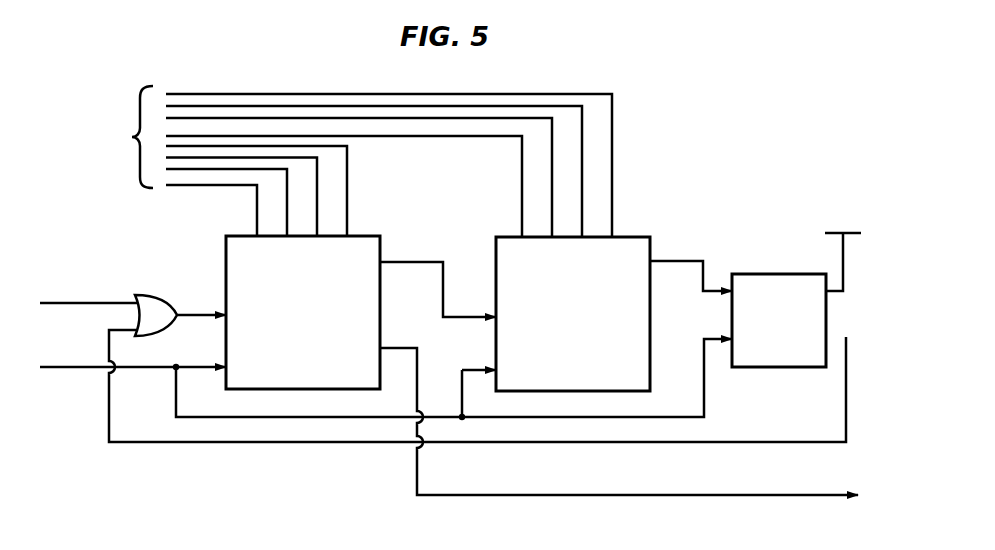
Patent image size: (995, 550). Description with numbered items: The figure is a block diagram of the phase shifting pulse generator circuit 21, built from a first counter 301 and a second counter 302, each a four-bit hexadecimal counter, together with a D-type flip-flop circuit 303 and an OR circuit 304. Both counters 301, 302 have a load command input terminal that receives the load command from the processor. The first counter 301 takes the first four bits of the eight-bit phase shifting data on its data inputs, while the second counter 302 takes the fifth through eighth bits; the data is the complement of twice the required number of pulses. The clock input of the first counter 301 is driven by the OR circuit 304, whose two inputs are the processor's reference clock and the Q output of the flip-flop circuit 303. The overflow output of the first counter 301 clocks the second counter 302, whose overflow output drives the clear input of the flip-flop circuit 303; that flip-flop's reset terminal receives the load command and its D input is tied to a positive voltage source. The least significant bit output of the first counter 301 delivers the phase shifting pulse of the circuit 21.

The phase shifting pulse generator circuit 21 is at (728, 164).
The first counter 301 is at (357, 236).
The second counter 302 is at (628, 237).
The D-type FF circuit 303 is at (750, 272).
The OR circuit 304 is at (137, 292).